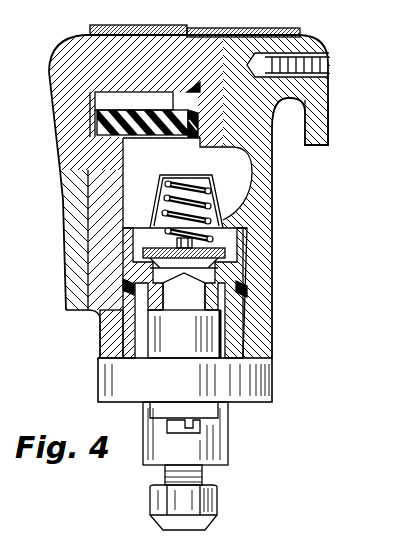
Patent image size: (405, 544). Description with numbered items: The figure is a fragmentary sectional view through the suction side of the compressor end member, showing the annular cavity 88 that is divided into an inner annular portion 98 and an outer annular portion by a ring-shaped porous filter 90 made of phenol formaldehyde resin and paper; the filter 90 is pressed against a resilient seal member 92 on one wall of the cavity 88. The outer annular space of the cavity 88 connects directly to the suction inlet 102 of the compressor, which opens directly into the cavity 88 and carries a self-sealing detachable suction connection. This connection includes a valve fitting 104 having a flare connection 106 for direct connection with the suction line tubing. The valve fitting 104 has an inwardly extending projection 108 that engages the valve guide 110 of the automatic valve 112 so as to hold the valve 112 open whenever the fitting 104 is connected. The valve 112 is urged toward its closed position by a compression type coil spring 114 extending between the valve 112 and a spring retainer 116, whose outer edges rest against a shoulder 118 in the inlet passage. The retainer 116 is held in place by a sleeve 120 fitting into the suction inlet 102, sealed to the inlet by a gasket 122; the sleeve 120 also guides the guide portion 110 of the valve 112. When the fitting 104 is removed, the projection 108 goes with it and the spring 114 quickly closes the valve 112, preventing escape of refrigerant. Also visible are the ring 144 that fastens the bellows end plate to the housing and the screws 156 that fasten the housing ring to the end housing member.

The annular cavity 88 is at (187, 183).
The ring-shaped porous filter 90 is at (147, 110).
The resilient seal member 92 is at (193, 132).
The inner annular portion 98 is at (128, 98).
The suction inlet 102 is at (267, 276).
The valve fitting 104 is at (268, 382).
The flare connection 106 is at (212, 508).
The inwardly extending projection 108 is at (218, 340).
The valve guide 110 is at (205, 295).
The automatic valve 112 is at (222, 253).
The compression type coil spring 114 is at (195, 243).
The spring retainer 116 is at (215, 183).
The shoulder 118 is at (228, 232).
The sleeve 120 is at (122, 313).
The gasket 122 is at (245, 290).
The ring 144 is at (318, 143).
The screws 156 is at (327, 60).